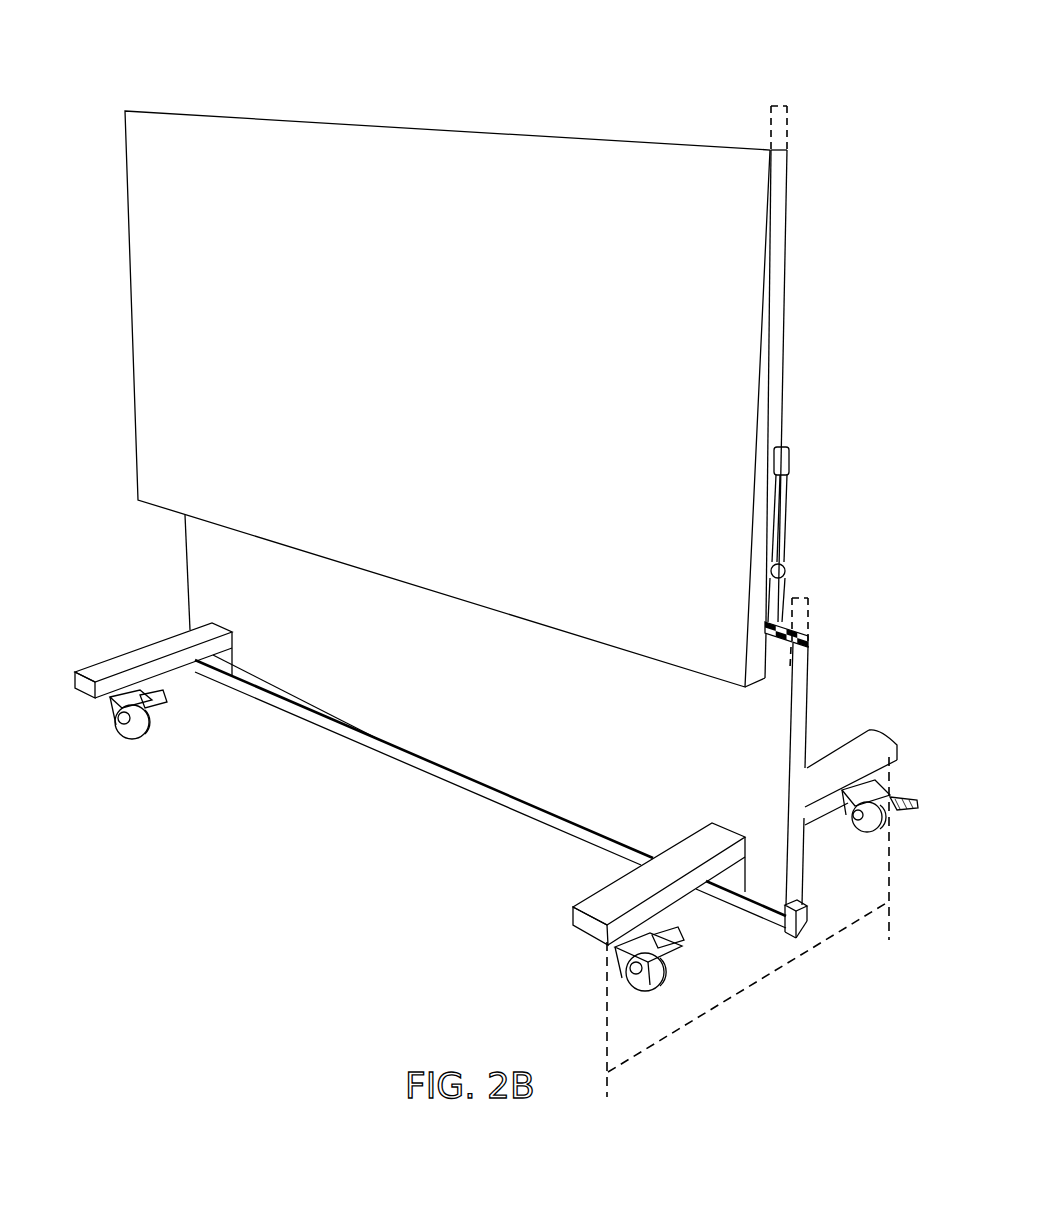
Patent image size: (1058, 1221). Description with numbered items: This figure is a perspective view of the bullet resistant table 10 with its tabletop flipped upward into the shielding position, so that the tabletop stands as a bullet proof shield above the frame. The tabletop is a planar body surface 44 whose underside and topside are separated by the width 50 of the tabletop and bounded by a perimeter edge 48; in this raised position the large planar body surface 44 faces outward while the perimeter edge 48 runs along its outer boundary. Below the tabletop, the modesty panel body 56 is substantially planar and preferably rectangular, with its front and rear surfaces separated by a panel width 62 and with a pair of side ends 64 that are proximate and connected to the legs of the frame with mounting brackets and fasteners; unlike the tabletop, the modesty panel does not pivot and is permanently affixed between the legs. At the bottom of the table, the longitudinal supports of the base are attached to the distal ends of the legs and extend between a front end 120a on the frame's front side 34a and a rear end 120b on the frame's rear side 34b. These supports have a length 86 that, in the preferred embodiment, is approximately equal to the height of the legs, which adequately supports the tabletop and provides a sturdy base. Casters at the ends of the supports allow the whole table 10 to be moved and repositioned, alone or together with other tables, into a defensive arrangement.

The table 10 is at (64, 29).
The planar body surface 44 is at (325, 223).
The perimeter edge 48 is at (773, 210).
The width 50 is at (787, 117).
The modesty panel body 56 is at (222, 590).
The front side 34a is at (386, 830).
The rear side 34b is at (832, 506).
The panel width 62 is at (808, 605).
The side ends 64 is at (797, 708).
The front end 120a is at (600, 908).
The rear end 120b is at (862, 747).
The length 86 is at (768, 975).